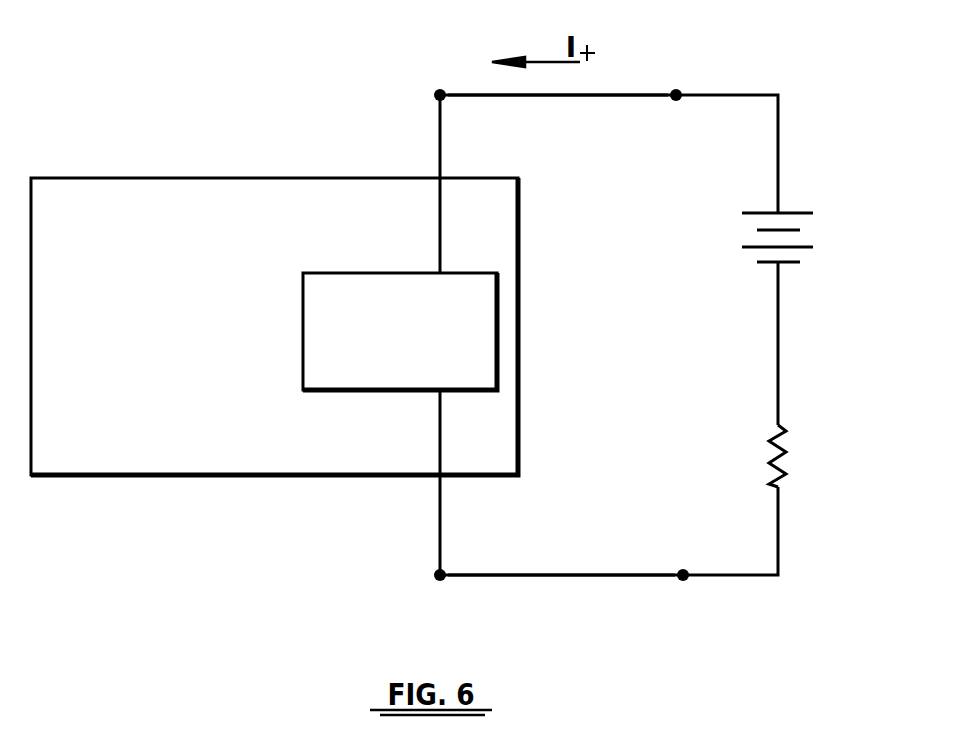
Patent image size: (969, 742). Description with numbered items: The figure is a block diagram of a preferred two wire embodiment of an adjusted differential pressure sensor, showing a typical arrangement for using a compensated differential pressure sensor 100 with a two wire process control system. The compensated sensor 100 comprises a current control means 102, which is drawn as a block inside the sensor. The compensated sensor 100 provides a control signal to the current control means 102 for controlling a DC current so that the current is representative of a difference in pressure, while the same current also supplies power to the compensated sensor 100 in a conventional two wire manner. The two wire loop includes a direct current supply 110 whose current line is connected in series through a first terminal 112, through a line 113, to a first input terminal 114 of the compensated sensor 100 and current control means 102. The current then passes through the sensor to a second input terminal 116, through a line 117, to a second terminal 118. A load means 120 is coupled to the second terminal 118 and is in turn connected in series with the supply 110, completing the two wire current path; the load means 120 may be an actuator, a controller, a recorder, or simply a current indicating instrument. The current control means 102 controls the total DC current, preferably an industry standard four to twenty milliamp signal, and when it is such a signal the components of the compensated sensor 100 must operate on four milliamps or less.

The compensated differential pressure sensor 100 is at (232, 478).
The current control means 102 is at (373, 273).
The direct current supply 110 is at (795, 212).
The first terminal 112 is at (677, 93).
The line 113 is at (618, 94).
The first input terminal 114 is at (439, 90).
The second input terminal 116 is at (437, 580).
The line 117 is at (563, 577).
The second terminal 118 is at (683, 581).
The load means 120 is at (786, 453).